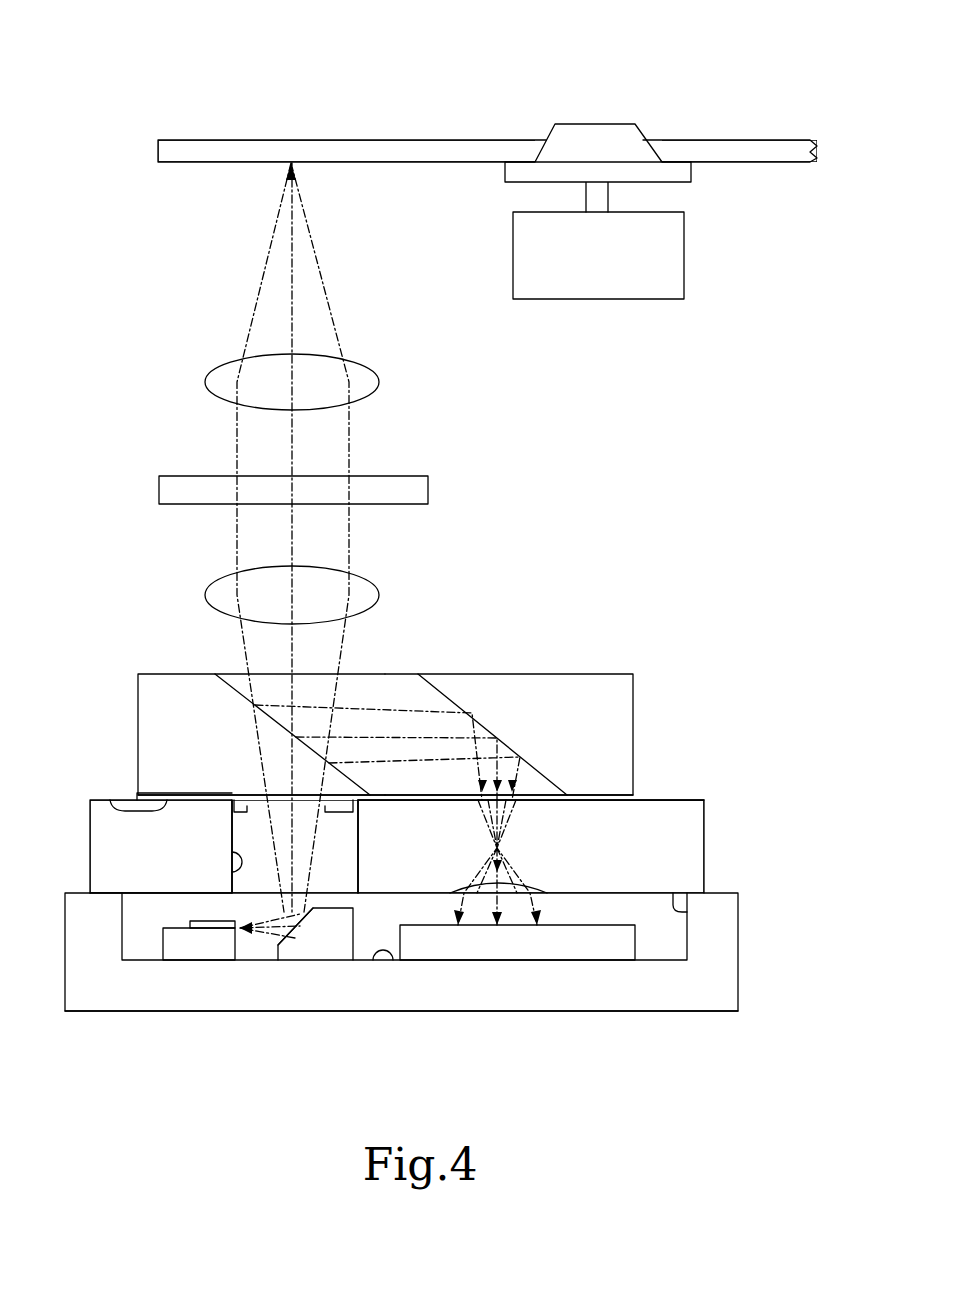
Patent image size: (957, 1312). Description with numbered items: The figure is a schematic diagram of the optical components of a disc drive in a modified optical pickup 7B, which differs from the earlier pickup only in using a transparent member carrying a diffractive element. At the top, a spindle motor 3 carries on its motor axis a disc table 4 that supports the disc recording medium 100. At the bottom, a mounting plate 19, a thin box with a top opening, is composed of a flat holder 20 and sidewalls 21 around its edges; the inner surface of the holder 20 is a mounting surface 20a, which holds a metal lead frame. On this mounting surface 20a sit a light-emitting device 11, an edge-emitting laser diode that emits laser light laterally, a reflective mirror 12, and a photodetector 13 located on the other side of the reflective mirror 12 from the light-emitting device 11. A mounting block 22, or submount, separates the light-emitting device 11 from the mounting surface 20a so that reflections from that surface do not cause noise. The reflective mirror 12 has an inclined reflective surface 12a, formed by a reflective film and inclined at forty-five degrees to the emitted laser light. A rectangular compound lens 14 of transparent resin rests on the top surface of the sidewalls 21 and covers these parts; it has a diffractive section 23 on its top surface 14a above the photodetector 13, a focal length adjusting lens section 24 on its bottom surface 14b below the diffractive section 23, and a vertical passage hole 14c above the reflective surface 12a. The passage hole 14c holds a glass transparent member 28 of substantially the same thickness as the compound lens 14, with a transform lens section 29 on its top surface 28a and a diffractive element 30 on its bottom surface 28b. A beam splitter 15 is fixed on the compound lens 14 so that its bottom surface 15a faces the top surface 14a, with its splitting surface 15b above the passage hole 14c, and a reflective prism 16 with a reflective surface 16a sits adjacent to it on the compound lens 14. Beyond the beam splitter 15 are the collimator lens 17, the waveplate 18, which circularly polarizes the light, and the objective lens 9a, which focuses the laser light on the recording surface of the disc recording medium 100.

The disc recording medium 100 is at (437, 140).
The disc table 4 is at (580, 128).
The spindle motor 3 is at (658, 240).
The objective lens 9a is at (363, 360).
The waveplate 18 is at (398, 490).
The collimator lens 17 is at (368, 577).
The optical pickup 7B is at (110, 317).
The beam splitter 15 is at (140, 688).
The bottom surface of the beam splitter 15a is at (152, 802).
The splitting surface 15b is at (240, 683).
The reflective prism 16 is at (533, 685).
The reflective surface of the reflective prism 16a is at (412, 690).
The diffractive section 23 is at (533, 797).
The compound lens 14 is at (703, 838).
The top surface of the compound lens 14a is at (663, 797).
The bottom surface of the compound lens 14b is at (740, 905).
The passage hole 14c is at (238, 860).
The transparent member 28 is at (227, 828).
The top surface of the transparent member 28a is at (236, 795).
The bottom surface of the transparent member 28b is at (262, 890).
The transform lens section 29 is at (250, 797).
The diffractive element 30 is at (258, 905).
The focal length adjusting lens section 24 is at (515, 893).
The mounting plate 19 is at (682, 995).
The holder 20 is at (623, 997).
The mounting surface 20a is at (393, 962).
The sidewalls 21 is at (727, 943).
The photodetector 13 is at (483, 952).
The mounting block 22 is at (197, 945).
The light-emitting device 11 is at (203, 918).
The reflective mirror 12 is at (327, 947).
The reflective surface 12a is at (253, 935).